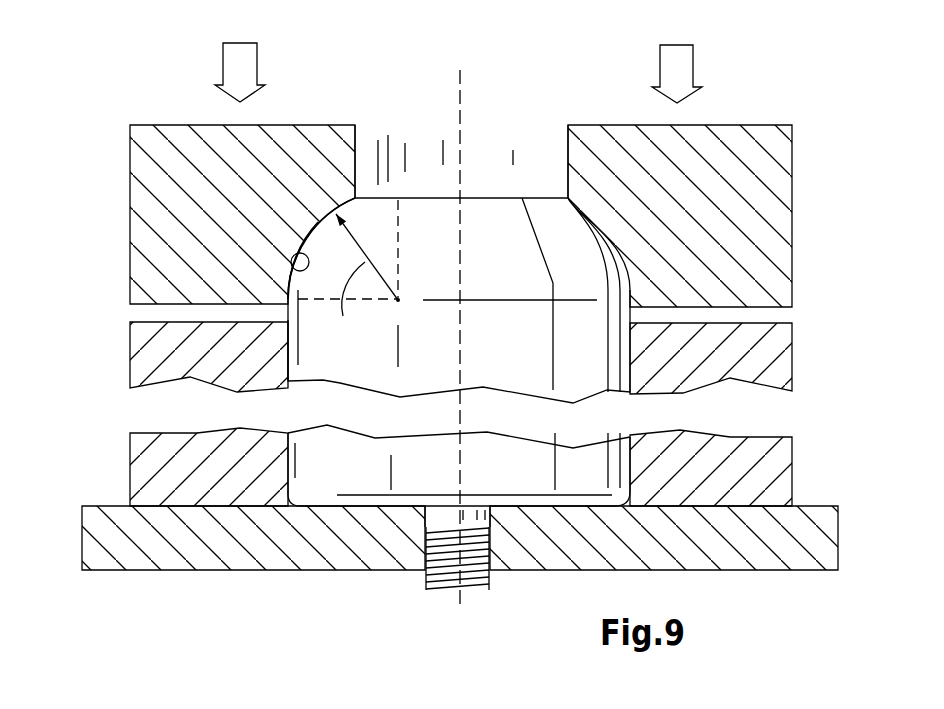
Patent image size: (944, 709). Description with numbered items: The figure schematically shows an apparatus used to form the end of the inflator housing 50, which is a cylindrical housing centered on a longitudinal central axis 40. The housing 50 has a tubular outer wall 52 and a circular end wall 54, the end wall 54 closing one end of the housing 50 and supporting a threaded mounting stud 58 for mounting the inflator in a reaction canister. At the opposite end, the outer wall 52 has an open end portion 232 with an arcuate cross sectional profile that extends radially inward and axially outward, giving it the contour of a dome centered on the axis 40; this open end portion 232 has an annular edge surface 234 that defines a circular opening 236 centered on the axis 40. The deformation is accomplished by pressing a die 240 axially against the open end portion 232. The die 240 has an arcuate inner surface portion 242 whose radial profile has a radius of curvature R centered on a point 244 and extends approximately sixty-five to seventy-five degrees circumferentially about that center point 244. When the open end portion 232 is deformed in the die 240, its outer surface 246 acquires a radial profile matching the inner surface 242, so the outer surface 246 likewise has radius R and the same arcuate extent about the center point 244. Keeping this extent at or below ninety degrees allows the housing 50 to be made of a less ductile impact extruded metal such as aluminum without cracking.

The die 240 is at (126, 152).
The outer surface 246 is at (317, 222).
The open end portion 232 is at (308, 229).
The arcuate inner surface portion 242 is at (292, 268).
The tubular outer wall 52 is at (330, 358).
The cylindrical housing 50 is at (290, 373).
The circular opening 236 is at (420, 183).
The annular edge surface 234 is at (490, 198).
The longitudinal central axis 40 is at (460, 90).
The center point 244 is at (398, 300).
The circular end wall 54 is at (347, 507).
The threaded mounting stud 58 is at (433, 578).